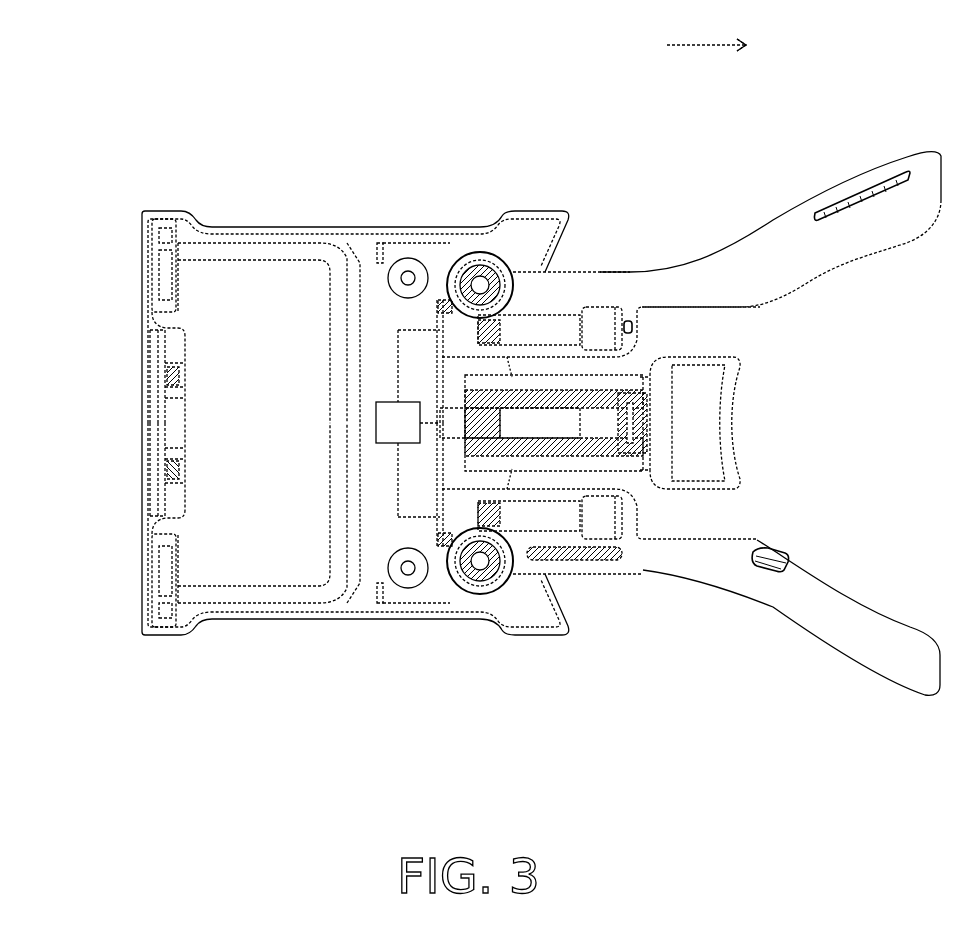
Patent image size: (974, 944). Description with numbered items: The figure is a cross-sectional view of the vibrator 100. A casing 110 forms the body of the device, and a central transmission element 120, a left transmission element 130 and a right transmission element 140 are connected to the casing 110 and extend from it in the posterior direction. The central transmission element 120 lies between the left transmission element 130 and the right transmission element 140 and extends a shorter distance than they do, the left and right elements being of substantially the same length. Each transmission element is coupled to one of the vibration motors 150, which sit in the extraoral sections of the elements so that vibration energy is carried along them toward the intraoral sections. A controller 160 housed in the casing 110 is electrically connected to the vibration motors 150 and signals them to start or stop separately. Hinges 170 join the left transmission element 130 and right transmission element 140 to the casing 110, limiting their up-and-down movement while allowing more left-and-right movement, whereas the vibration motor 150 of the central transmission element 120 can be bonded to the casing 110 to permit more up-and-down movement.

The vibrator 100 is at (85, 32).
The casing 110 is at (263, 610).
The central transmission element 120 is at (690, 410).
The left transmission element 130 is at (862, 213).
The right transmission element 140 is at (863, 630).
The vibration motors 150 is at (553, 420).
The controller 160 is at (392, 427).
The hinges 170 is at (467, 267).